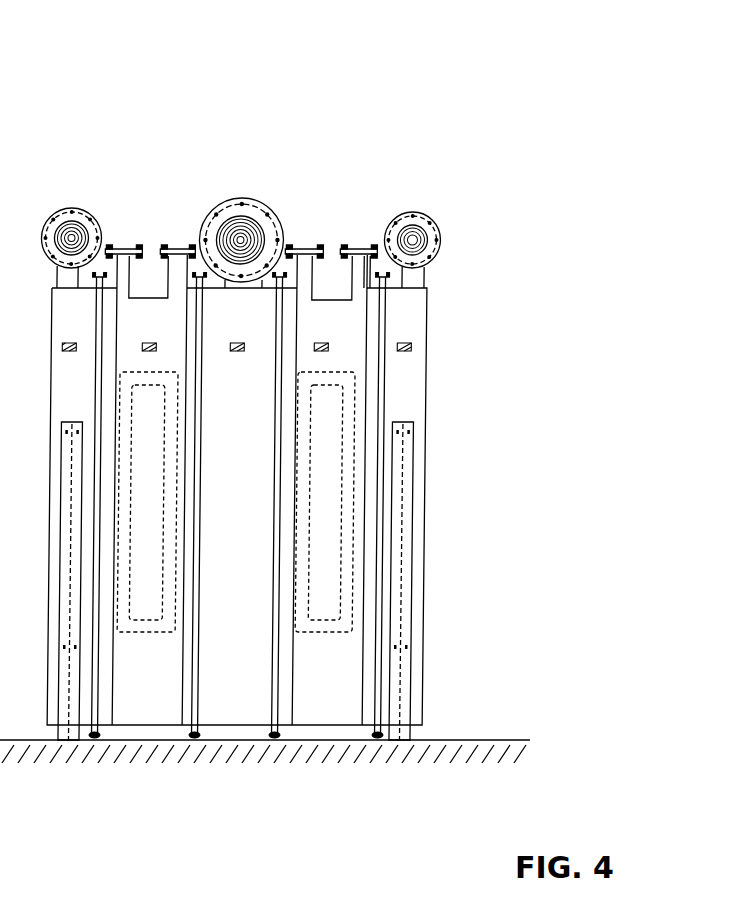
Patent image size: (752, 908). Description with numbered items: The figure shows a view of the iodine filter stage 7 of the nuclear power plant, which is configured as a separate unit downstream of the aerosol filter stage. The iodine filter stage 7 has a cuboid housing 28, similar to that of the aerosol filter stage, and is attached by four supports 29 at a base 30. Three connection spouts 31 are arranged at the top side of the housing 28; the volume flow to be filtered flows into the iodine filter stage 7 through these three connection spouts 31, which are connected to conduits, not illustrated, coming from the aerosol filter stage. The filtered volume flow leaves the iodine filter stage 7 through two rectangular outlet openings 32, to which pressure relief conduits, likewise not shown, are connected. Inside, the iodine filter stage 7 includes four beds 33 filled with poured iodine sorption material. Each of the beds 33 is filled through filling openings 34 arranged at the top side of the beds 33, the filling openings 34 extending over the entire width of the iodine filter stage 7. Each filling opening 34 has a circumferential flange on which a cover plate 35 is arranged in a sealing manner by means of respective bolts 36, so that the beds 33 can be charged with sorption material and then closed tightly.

The iodine filter stage 7 is at (520, 225).
The housing 28 is at (427, 441).
The supports 29 is at (405, 598).
The base 30 is at (488, 740).
The connection spouts 31 is at (408, 212).
The outlet openings 32 is at (148, 505).
The beds 33 is at (120, 297).
The filling openings 34 is at (178, 250).
The cover plate 35 is at (367, 250).
The bolts 36 is at (372, 248).